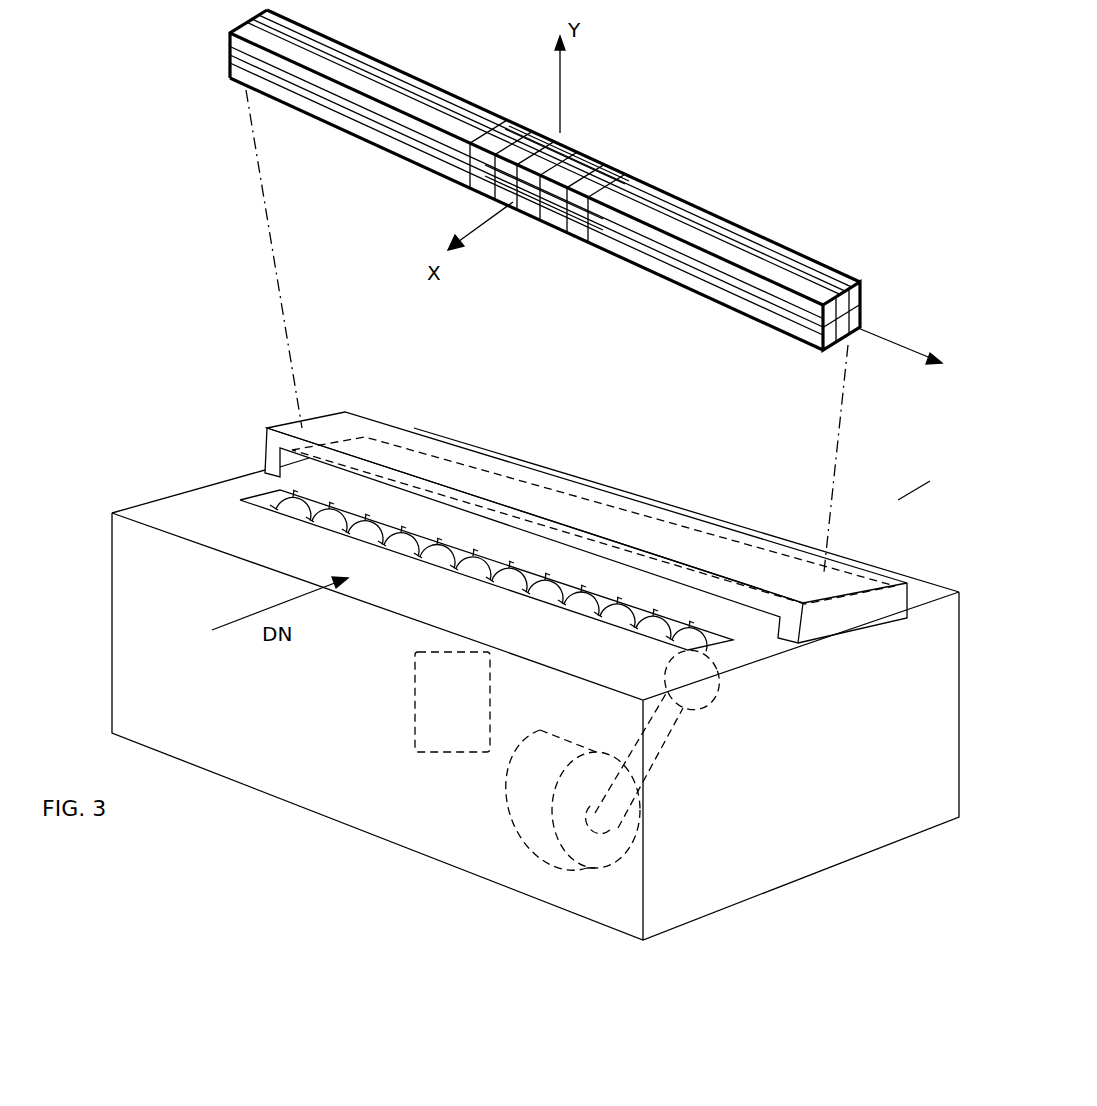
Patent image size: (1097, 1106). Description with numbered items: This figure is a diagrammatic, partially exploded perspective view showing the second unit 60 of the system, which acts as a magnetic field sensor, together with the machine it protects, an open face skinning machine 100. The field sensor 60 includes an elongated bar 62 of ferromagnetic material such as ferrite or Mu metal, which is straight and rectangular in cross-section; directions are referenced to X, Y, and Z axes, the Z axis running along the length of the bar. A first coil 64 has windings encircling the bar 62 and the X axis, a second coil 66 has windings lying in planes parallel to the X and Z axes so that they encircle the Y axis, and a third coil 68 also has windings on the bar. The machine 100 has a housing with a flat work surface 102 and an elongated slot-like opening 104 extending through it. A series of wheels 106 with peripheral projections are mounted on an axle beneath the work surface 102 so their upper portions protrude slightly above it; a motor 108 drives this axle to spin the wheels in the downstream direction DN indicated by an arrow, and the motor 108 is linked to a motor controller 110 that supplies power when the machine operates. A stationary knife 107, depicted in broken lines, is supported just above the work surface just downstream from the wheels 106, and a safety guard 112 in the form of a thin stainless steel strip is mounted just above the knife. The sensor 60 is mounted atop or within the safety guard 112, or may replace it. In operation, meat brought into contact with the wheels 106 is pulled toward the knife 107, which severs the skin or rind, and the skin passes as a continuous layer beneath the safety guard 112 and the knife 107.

The second unit 60 is at (559, 197).
The elongated bar 62 is at (805, 257).
The first coil 64 is at (742, 242).
The second coil 66 is at (707, 285).
The third coil 68 is at (567, 148).
The open face skinning machine 100 is at (503, 634).
The work surface 102 is at (235, 543).
The opening 104 is at (242, 499).
The wheels 106 is at (287, 502).
The stationary knife 107 is at (470, 468).
The motor 108 is at (517, 783).
The motor controller 110 is at (420, 703).
The safety guard 112 is at (640, 540).